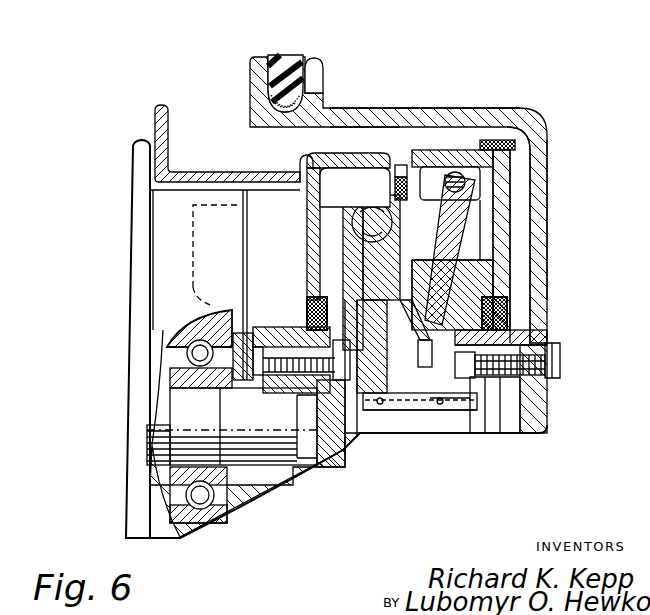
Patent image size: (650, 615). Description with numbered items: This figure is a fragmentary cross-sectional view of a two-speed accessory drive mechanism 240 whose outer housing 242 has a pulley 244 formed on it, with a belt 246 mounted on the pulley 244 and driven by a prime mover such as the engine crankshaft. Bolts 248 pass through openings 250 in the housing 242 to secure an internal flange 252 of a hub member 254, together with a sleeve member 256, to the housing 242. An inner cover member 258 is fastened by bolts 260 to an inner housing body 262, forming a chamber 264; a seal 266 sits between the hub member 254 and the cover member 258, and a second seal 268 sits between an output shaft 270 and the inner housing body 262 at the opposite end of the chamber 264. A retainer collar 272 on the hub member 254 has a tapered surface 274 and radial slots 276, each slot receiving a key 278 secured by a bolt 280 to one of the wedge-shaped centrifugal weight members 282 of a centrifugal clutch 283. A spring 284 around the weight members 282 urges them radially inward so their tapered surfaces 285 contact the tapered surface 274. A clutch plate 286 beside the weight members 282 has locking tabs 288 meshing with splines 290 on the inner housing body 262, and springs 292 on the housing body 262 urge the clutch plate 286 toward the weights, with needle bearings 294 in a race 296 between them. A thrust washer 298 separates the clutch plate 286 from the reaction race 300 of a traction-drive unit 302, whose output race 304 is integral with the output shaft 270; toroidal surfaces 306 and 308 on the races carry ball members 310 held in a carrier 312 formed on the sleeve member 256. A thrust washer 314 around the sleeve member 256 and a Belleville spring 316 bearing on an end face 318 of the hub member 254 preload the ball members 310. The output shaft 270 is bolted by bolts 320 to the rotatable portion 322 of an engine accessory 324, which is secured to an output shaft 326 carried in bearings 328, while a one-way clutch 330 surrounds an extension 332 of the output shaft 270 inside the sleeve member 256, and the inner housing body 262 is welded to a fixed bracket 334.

The two-speed accessory drive mechanism 240 is at (224, 118).
The outer housing 242 is at (345, 108).
The pulley 244 is at (334, 57).
The belt 246 is at (297, 68).
The bolts 248 is at (565, 357).
The openings 250 is at (560, 372).
The internal flange 252 is at (540, 342).
The hub member 254 is at (512, 332).
The sleeve member 256 is at (478, 392).
The inner cover member 258 is at (546, 240).
The bolts 260 is at (528, 135).
The inner housing body 262 is at (400, 165).
The chamber 264 is at (380, 153).
The seal 266 is at (492, 307).
The second seal 268 is at (318, 308).
The output shaft 270 is at (308, 328).
The retainer collar 272 is at (487, 186).
The tapered surface 274 is at (492, 200).
The radial slots 276 is at (470, 292).
The key 278 is at (487, 276).
The bolt 280 is at (500, 258).
The wedge-shaped centrifugal weight members 282 is at (497, 156).
The centrifugal clutch 283 is at (548, 158).
The spring 284 is at (512, 180).
The tapered surfaces 285 is at (508, 230).
The clutch plate 286 is at (452, 170).
The locking tabs 288 is at (405, 185).
The splines 290 is at (385, 168).
The springs 292 is at (355, 187).
The needle bearings 294 is at (453, 250).
The race 296 is at (460, 166).
The thrust washer 298 is at (420, 405).
The reaction race 300 is at (345, 275).
The traction-drive unit 302 is at (305, 262).
The output race 304 is at (252, 183).
The toroidal surface 306 is at (358, 250).
The toroidal surface 308 is at (343, 230).
The ball members 310 is at (355, 215).
The carrier 312 is at (336, 419).
The thrust washer 314 is at (420, 411).
The Belleville spring 316 is at (426, 368).
The end face 318 is at (438, 335).
The bolts 320 is at (287, 373).
The rotatable portion 322 is at (250, 346).
The engine accessory 324 is at (128, 232).
The output shaft 326 is at (200, 420).
The bearings 328 is at (205, 366).
The one-way clutch 330 is at (440, 420).
The extension 332 is at (419, 430).
The fixed bracket 334 is at (190, 172).